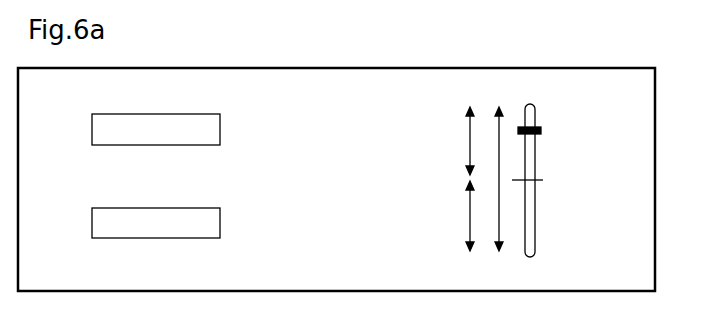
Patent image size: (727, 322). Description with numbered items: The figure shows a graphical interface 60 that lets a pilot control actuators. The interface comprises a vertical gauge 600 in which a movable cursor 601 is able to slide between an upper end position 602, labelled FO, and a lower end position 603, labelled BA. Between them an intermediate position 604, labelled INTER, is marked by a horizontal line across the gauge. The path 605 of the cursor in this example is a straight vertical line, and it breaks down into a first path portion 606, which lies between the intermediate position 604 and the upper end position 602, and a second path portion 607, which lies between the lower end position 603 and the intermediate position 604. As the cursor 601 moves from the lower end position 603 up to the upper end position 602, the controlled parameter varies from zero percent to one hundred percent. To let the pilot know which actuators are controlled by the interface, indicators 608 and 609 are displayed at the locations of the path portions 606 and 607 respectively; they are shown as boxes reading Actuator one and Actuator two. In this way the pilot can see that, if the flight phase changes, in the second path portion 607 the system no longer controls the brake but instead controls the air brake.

The graphical interface 60 is at (334, 68).
The vertical gauge 600 is at (524, 117).
The movable cursor 601 is at (541, 131).
The upper end position 602 is at (531, 101).
The lower end position 603 is at (532, 258).
The intermediate position 604 is at (541, 184).
The path 605 is at (499, 227).
The first path portion 606 is at (470, 143).
The second path portion 607 is at (470, 213).
The indicator 608 is at (220, 127).
The indicator 609 is at (220, 222).